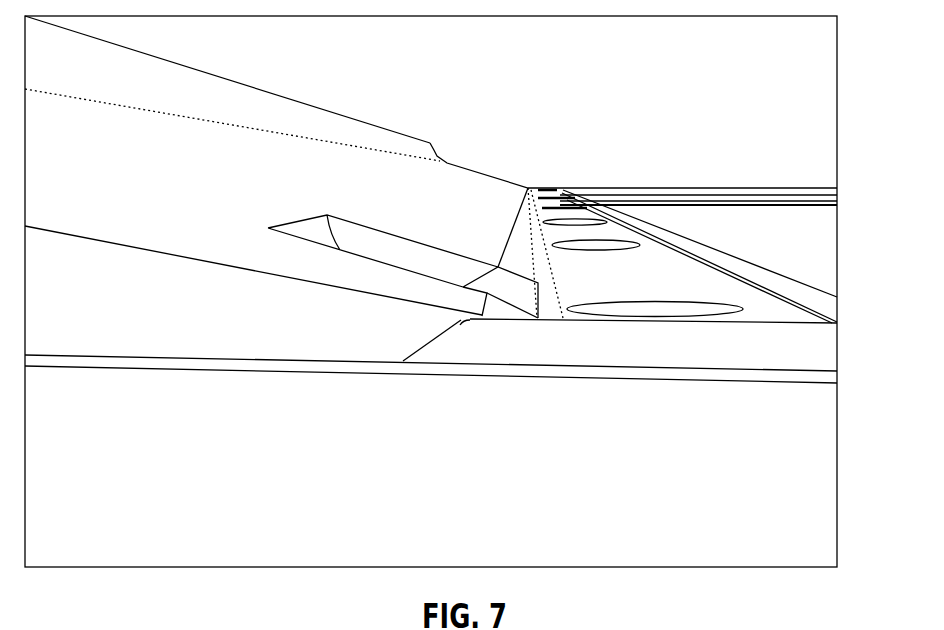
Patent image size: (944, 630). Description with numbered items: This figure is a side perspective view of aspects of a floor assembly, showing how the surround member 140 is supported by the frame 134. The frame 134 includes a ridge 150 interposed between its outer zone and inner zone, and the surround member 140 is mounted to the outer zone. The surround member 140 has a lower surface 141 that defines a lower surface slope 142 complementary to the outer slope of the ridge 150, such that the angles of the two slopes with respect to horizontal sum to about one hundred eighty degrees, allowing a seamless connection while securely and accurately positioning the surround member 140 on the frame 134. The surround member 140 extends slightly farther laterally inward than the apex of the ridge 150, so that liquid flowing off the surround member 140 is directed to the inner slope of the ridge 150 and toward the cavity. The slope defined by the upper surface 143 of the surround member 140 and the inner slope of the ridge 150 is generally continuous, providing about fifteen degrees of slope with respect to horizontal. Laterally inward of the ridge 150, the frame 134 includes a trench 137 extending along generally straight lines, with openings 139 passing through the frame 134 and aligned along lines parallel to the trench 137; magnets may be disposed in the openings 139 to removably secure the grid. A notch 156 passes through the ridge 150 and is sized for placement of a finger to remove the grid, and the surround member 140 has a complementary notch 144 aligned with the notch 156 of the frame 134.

The frame 134 is at (703, 558).
The trench 137 is at (659, 282).
The openings 139 is at (707, 303).
The surround member 140 is at (436, 124).
The lower surface 141 is at (470, 320).
The lower surface slope 142 is at (459, 335).
The upper surface 143 is at (242, 113).
The complementary notch 144 is at (389, 240).
The ridge 150 is at (498, 267).
The notch 156 is at (512, 293).